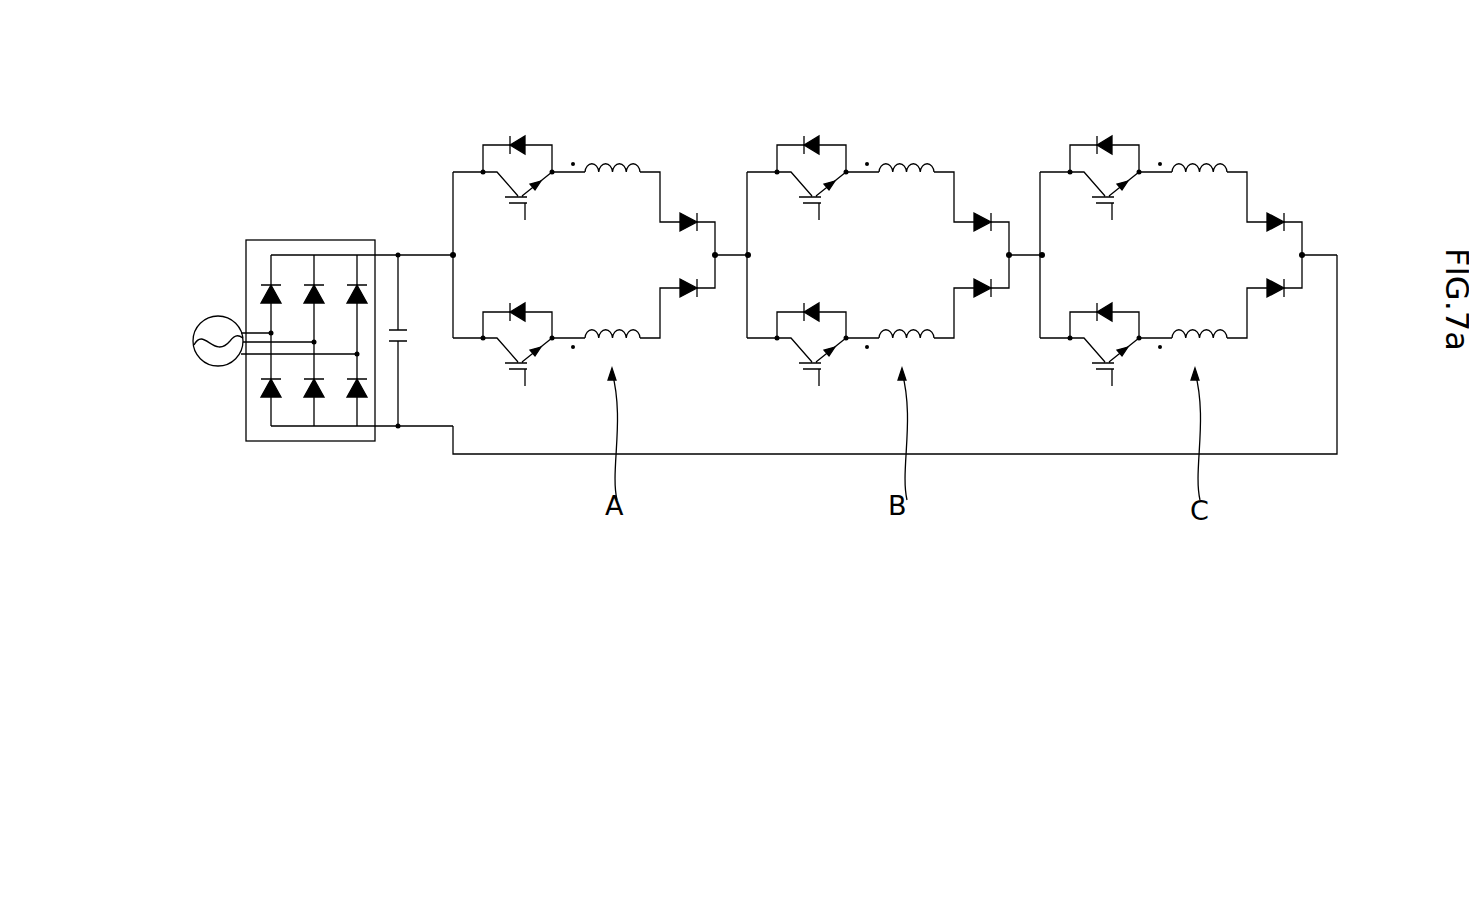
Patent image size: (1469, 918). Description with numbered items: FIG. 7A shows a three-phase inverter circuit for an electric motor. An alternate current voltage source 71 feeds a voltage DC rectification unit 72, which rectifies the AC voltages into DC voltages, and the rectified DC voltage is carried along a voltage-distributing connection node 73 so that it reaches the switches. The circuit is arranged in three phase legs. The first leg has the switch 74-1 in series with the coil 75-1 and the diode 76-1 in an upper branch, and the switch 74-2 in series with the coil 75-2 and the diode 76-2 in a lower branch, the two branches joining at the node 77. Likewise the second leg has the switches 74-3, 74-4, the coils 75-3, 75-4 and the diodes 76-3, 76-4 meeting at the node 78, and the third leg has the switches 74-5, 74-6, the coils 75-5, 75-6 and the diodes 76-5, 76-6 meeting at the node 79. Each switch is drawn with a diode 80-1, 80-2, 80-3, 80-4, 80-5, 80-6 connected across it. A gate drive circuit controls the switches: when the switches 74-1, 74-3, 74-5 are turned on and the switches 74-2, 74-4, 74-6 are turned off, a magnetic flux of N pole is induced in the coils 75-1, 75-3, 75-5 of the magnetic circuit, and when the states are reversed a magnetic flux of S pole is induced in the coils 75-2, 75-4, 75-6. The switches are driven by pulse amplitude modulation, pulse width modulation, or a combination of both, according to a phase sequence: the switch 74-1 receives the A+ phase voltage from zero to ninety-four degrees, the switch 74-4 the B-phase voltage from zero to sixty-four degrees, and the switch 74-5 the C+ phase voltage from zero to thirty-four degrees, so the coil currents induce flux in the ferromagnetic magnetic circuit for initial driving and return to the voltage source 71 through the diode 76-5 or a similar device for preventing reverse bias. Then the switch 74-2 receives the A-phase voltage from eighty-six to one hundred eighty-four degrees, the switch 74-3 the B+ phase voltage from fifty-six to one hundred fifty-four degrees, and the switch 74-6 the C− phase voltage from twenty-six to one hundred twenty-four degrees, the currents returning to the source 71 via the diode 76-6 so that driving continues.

The alternate current voltage source 71 is at (200, 363).
The voltage DC rectification unit 72 is at (312, 442).
The voltage-distributing connection node 73 is at (452, 254).
The S1 switch 74-1 is at (524, 204).
The S2 switch 74-2 is at (525, 386).
The S3 switch 74-3 is at (830, 164).
The S4 switch 74-4 is at (819, 415).
The S5 switch 74-5 is at (1123, 163).
The S6 switch 74-6 is at (1111, 414).
The coil 75-1 is at (617, 163).
The coil 75-2 is at (637, 350).
The coil 75-3 is at (916, 142).
The coil 75-4 is at (943, 359).
The coil 75-5 is at (1208, 142).
The coil 75-6 is at (1236, 359).
The diode 76-1 is at (690, 212).
The diode 76-2 is at (707, 307).
The diode 76-3 is at (993, 197).
The diode 76-4 is at (1003, 313).
The diode 76-5 is at (1285, 198).
The diode 76-6 is at (1337, 283).
The output node of phase A 77 is at (717, 253).
The output node of phase B 78 is at (1025, 225).
The output node of phase C 79 is at (1321, 227).
The freewheeling diode 80-1 is at (515, 136).
The freewheeling diode 80-2 is at (518, 303).
The freewheeling diode 80-3 is at (799, 129).
The freewheeling diode 80-4 is at (812, 296).
The freewheeling diode 80-5 is at (1092, 132).
The freewheeling diode 80-6 is at (1113, 296).